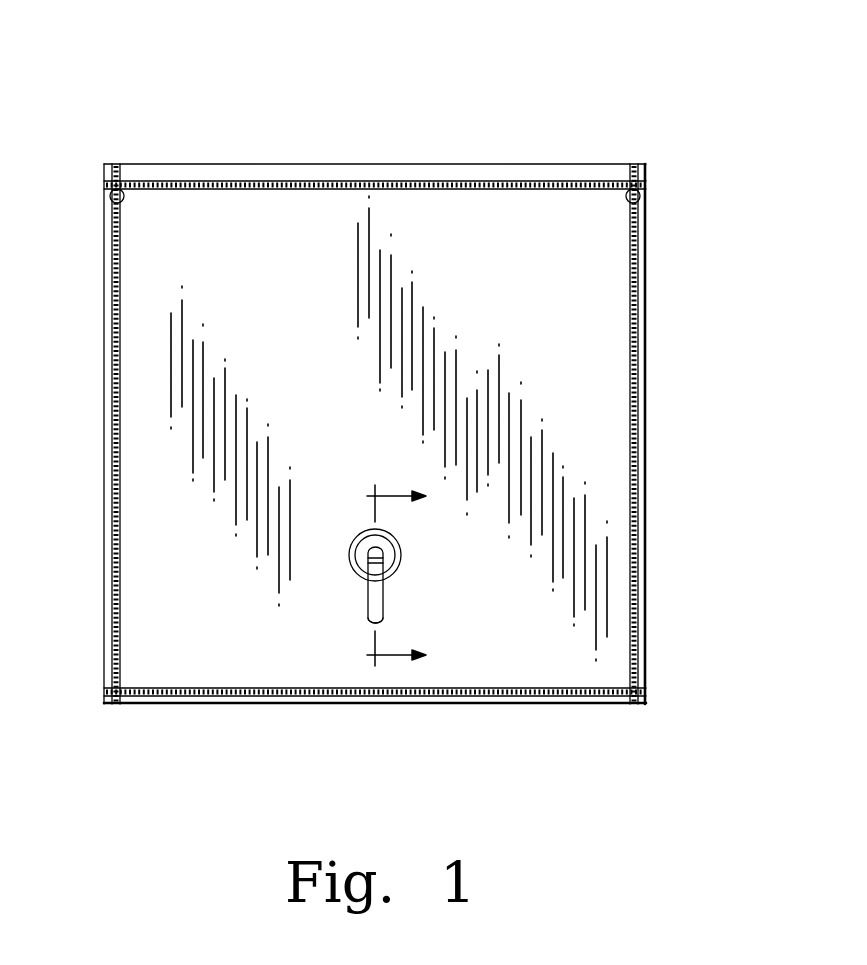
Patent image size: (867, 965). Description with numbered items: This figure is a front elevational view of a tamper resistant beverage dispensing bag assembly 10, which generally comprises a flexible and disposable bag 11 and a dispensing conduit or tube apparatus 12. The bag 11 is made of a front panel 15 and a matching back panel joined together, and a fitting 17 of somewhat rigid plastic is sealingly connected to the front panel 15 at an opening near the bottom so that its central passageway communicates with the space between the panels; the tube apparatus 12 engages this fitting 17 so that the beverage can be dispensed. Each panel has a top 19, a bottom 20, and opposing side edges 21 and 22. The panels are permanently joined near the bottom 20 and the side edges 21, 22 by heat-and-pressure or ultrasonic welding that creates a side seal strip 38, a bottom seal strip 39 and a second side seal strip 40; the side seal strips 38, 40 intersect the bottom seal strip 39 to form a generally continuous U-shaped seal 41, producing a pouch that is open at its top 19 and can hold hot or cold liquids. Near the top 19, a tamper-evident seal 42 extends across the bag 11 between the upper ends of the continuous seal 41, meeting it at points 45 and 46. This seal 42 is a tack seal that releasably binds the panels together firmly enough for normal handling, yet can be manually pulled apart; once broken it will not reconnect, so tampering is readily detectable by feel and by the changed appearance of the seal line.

The tamper resistant beverage dispensing bag assembly 10 is at (688, 80).
The bag 11 is at (518, 156).
The dispensing conduit or tube apparatus 12 is at (396, 592).
The front panel 15 is at (138, 262).
The fitting 17 is at (401, 558).
The top 19 is at (192, 163).
The bottom 20 is at (192, 705).
The side edge 21 is at (106, 455).
The side edge 22 is at (648, 405).
The side seal strip 38 is at (116, 315).
The bottom seal strip 39 is at (250, 690).
The side seal strip 40 is at (634, 332).
The continuous U-shaped seal 41 is at (106, 606).
The tamper-evident seal 42 is at (380, 182).
The point 45 is at (108, 192).
The point 46 is at (642, 194).